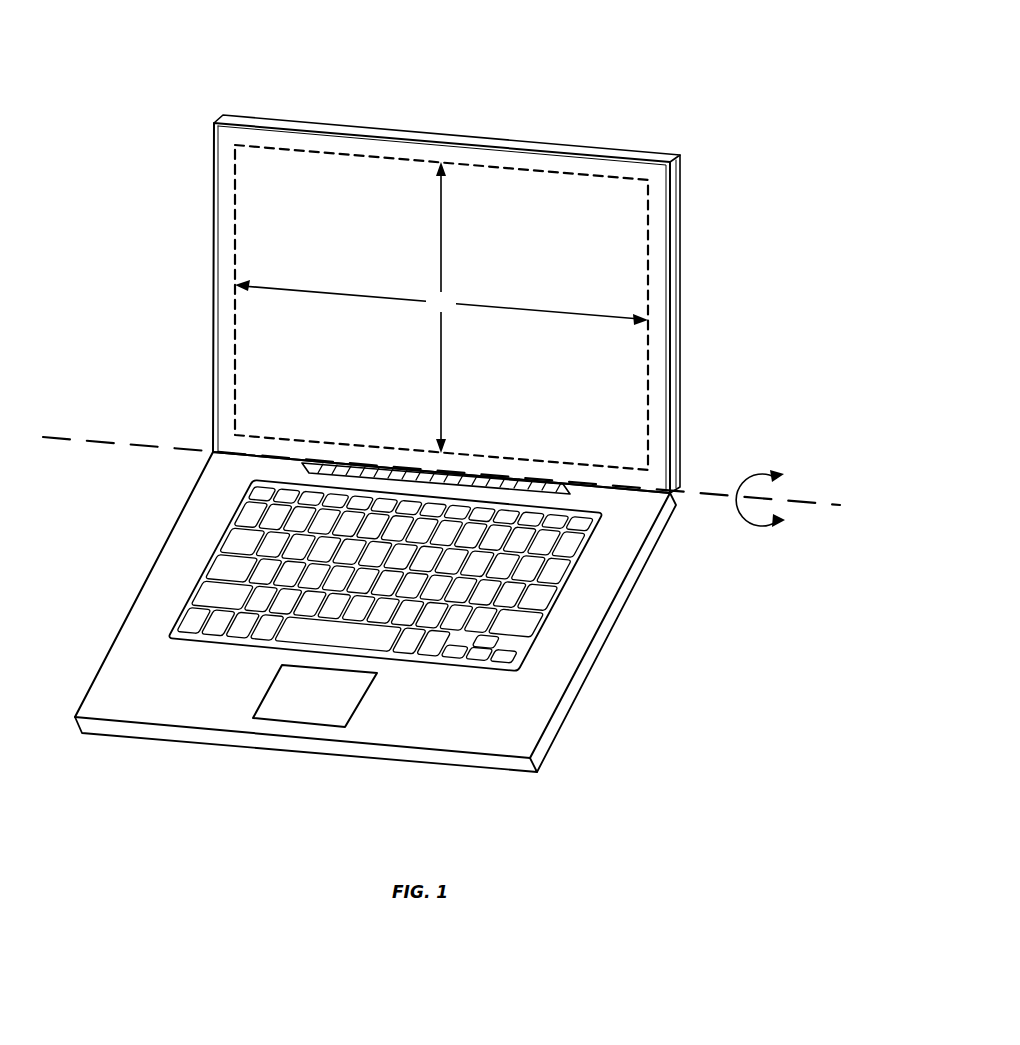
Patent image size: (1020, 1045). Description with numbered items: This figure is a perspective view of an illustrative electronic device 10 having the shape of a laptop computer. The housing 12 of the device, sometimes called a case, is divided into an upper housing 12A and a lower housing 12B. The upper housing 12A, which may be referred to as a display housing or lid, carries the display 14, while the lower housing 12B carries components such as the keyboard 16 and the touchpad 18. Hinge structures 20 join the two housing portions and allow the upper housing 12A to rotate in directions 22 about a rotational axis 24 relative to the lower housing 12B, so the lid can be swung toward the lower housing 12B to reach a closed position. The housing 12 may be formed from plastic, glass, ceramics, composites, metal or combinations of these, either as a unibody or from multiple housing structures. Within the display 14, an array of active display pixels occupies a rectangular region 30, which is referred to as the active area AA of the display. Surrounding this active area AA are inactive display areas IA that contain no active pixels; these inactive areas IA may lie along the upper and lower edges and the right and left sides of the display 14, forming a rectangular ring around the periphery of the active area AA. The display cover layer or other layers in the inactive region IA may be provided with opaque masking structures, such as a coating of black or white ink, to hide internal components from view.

The electronic device 10 is at (442, 408).
The housing 12 is at (398, 443).
The upper housing 12A is at (201, 125).
The lower housing 12B is at (361, 612).
The display 14 is at (492, 276).
The keyboard 16 is at (553, 603).
The touchpad 18 is at (325, 728).
The hinge structures 20 is at (543, 487).
The directions 22 is at (763, 532).
The rotational axis 24 is at (62, 437).
The rectangular region 30 is at (648, 207).
The inactive display areas IA is at (306, 142).
The active area AA is at (441, 307).